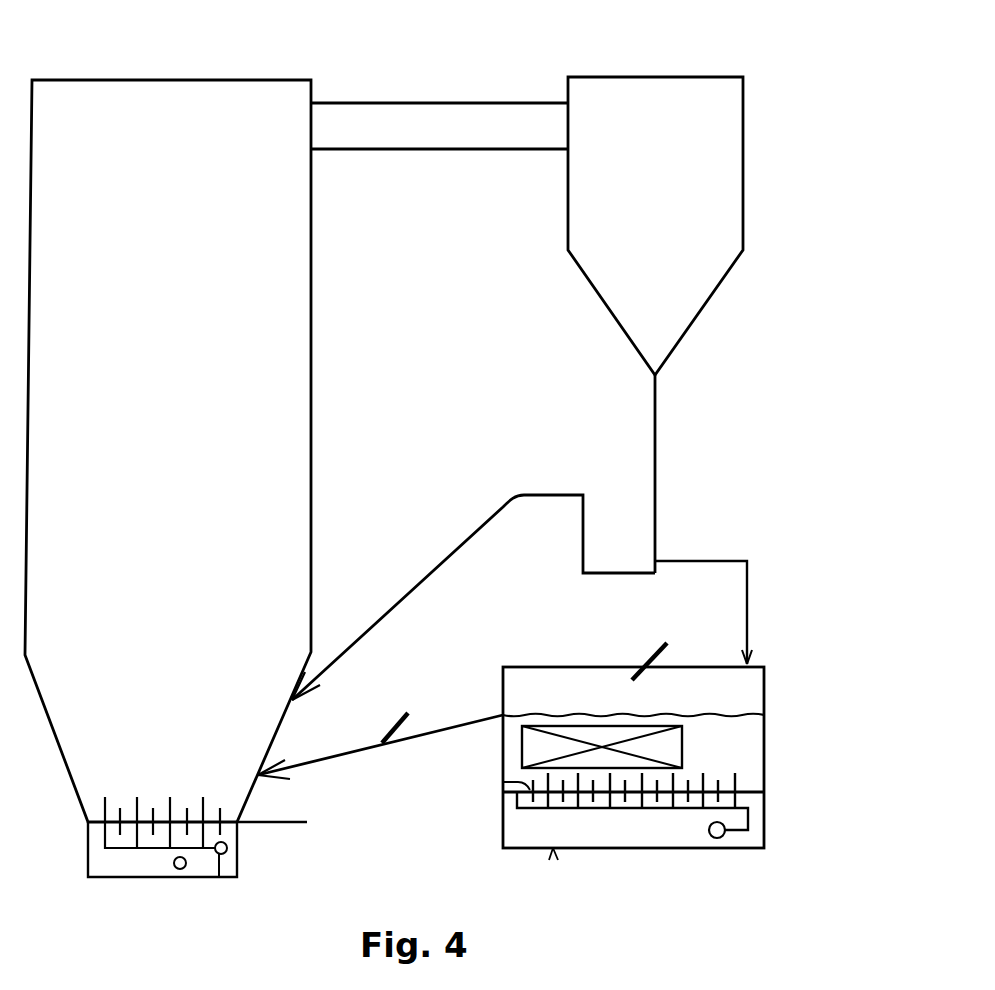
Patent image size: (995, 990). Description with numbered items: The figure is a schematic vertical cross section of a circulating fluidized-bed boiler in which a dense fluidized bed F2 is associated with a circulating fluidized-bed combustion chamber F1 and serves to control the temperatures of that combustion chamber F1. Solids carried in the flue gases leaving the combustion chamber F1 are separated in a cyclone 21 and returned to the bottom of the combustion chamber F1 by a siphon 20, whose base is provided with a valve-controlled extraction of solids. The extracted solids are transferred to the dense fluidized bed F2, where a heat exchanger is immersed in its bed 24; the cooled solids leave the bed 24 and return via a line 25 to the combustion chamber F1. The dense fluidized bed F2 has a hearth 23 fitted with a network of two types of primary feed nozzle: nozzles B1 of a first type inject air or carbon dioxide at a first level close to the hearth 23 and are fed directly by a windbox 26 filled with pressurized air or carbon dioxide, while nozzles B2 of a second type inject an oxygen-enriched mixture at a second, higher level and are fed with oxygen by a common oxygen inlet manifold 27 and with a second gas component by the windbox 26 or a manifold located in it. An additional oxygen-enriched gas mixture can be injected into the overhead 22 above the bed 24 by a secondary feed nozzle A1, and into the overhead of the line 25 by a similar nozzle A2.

The circulating fluidized-bed combustion chamber F1 is at (175, 390).
The dense fluidized bed F2 is at (553, 850).
The siphon 20 is at (656, 461).
The cyclone 21 is at (743, 177).
The overhead 22 is at (710, 667).
The hearth 23 is at (752, 790).
The bed 24 is at (750, 732).
The line 25 is at (467, 720).
The windbox 26 is at (642, 842).
The common oxygen inlet manifold 27 is at (711, 837).
The secondary feed nozzle A1 is at (653, 653).
The secondary feed nozzle A2 is at (390, 733).
The first type of primary feed nozzle B1 is at (503, 782).
The second type of primary feed nozzle B2 is at (585, 785).